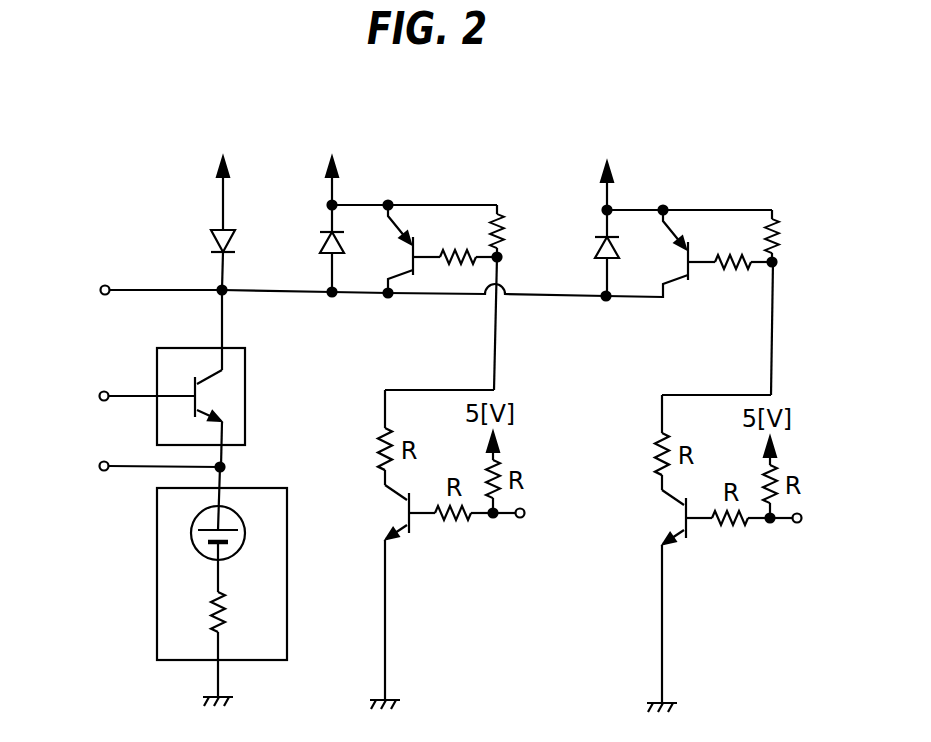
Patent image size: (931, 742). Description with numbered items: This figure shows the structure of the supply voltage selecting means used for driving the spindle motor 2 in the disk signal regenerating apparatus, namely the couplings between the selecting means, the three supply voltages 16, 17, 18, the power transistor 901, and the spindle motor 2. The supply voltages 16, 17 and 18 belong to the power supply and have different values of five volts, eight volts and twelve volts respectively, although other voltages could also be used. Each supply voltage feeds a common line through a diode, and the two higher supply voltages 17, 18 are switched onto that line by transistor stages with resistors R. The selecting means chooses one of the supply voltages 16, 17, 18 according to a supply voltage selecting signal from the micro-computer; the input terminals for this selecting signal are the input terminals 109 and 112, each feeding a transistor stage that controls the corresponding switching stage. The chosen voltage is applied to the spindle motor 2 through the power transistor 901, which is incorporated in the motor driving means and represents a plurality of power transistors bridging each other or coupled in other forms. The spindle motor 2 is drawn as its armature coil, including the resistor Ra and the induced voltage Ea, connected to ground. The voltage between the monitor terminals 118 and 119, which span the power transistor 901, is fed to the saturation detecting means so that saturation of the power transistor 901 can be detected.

The spindle motor 2 is at (281, 488).
The supply voltage 16 is at (222, 190).
The supply voltage 17 is at (418, 191).
The supply voltage 18 is at (688, 197).
The input terminal 109 is at (523, 516).
The input terminal 112 is at (815, 546).
The monitor terminal 118 is at (104, 286).
The monitor terminal 119 is at (104, 462).
The power transistor 901 is at (246, 368).